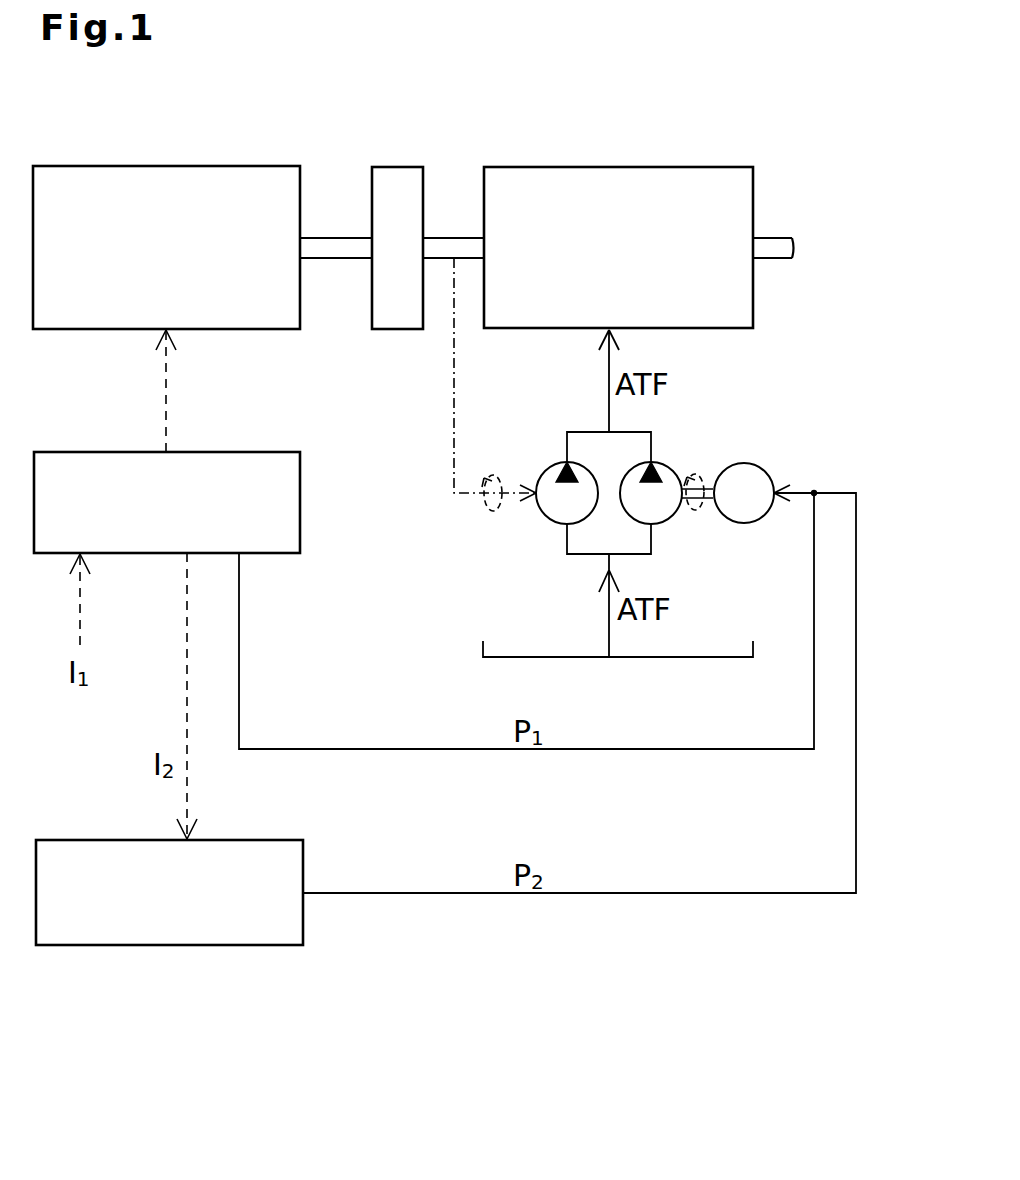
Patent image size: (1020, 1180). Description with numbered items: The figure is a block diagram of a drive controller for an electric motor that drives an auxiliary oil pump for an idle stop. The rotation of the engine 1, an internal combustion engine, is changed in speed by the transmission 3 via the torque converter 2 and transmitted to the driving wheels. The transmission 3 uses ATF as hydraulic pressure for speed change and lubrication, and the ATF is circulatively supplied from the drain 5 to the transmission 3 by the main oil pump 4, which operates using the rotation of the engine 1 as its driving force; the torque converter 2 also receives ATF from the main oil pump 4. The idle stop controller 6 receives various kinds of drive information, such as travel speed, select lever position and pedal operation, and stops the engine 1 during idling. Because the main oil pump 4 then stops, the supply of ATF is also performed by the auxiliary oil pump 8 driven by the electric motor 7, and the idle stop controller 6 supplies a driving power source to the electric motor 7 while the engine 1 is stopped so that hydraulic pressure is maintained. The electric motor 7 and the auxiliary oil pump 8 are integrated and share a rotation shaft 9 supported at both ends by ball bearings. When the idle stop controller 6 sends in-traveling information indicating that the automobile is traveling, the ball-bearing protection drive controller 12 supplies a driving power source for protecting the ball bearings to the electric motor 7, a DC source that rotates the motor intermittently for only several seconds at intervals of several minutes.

The engine 1 is at (231, 184).
The torque converter 2 is at (399, 322).
The transmission 3 is at (576, 185).
The main oil pump 4 is at (548, 474).
The drain 5 is at (540, 655).
The idle stop controller 6 is at (293, 520).
The electric motor 7 is at (748, 517).
The auxiliary oil pump 8 is at (657, 468).
The rotation shaft 9 is at (686, 510).
The ball-bearing protection drive controller 12 is at (188, 932).